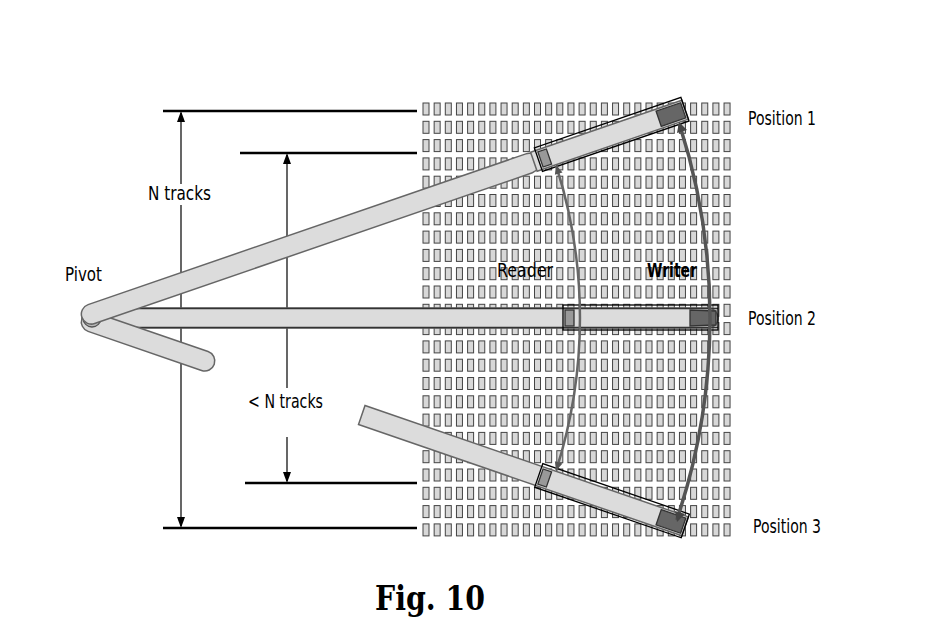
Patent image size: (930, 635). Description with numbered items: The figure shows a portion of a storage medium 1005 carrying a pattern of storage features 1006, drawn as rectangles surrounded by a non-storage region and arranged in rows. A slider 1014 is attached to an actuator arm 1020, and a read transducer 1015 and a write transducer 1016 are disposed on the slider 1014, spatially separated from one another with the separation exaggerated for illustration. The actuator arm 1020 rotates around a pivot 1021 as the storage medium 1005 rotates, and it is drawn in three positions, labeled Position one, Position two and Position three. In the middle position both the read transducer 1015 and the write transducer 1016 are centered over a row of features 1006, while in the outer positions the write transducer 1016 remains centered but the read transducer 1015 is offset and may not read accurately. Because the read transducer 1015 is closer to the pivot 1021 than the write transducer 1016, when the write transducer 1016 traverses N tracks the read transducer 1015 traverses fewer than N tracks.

The storage medium 1005 is at (550, 91).
The storage features 1006 is at (729, 260).
The slider 1014 is at (684, 108).
The read transducer 1015 is at (545, 143).
The write transducer 1016 is at (666, 104).
The actuator arm 1020 is at (400, 211).
The pivot 1021 is at (87, 317).